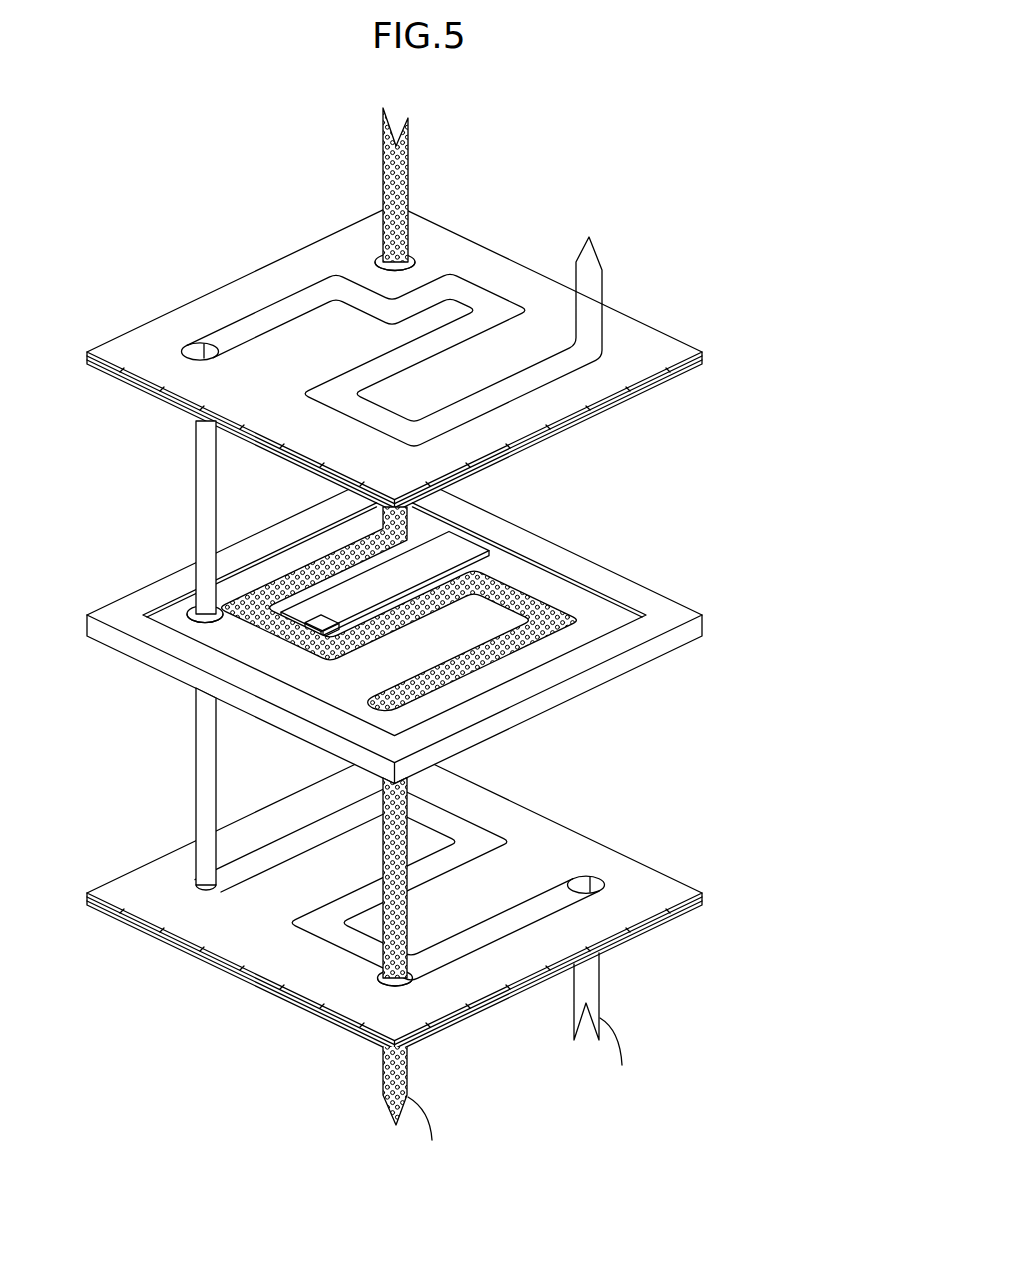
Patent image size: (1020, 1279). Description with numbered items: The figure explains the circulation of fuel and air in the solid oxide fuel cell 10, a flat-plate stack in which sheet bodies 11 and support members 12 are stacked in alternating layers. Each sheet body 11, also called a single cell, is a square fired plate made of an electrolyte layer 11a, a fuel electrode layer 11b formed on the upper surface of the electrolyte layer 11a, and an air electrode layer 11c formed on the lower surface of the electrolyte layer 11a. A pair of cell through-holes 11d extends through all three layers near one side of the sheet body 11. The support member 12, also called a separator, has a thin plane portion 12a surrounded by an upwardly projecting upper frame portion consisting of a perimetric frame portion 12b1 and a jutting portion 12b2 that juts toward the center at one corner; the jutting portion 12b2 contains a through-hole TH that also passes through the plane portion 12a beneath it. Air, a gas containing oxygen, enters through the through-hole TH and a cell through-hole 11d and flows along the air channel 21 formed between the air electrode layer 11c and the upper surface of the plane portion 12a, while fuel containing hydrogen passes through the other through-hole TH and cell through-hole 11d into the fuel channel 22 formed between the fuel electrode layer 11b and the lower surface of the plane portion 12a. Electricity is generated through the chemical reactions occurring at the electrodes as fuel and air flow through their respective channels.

The solid oxide fuel cell 10 is at (671, 232).
The sheet body 11 is at (620, 868).
The electrolyte layer 11a is at (706, 356).
The fuel electrode layer 11b is at (702, 353).
The air electrode layer 11c is at (706, 360).
The cell through-hole 11d is at (382, 256).
The support member 12 is at (646, 481).
The plane portion 12a is at (527, 580).
The perimetric frame portion 12b1 is at (677, 610).
The jutting portion 12b2 is at (238, 618).
The air channel 21 is at (490, 577).
The fuel channel 22 is at (498, 276).
The through-hole TH is at (187, 613).